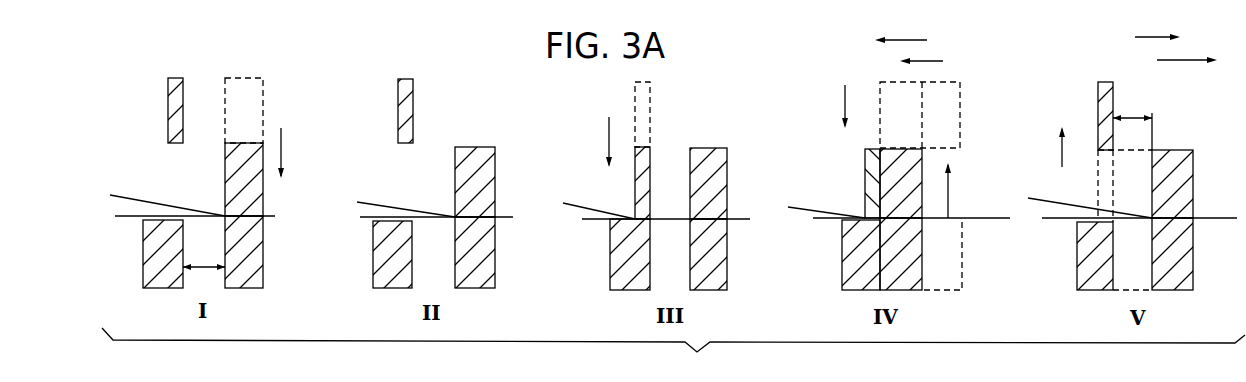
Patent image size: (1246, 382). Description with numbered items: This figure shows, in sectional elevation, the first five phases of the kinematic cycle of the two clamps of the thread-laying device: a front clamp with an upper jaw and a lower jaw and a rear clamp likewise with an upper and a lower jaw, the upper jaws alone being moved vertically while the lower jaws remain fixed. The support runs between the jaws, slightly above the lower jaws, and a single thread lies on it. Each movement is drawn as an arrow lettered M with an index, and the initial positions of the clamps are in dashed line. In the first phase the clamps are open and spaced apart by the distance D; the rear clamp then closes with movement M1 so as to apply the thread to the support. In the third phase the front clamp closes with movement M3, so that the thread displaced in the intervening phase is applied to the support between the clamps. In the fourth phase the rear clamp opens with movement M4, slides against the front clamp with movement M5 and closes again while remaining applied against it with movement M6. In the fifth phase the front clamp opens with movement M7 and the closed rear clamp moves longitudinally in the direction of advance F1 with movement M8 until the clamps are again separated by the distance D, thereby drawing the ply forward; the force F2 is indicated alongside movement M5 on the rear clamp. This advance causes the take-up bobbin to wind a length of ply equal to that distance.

The movement M1 is at (295, 153).
The movement M3 is at (594, 142).
The movement M4 is at (969, 190).
The movement M5 is at (939, 57).
The movement M6 is at (860, 106).
The movement M7 is at (1066, 164).
The movement M8 is at (1157, 58).
The direction of advance F1 is at (1139, 25).
The force F2 is at (914, 26).